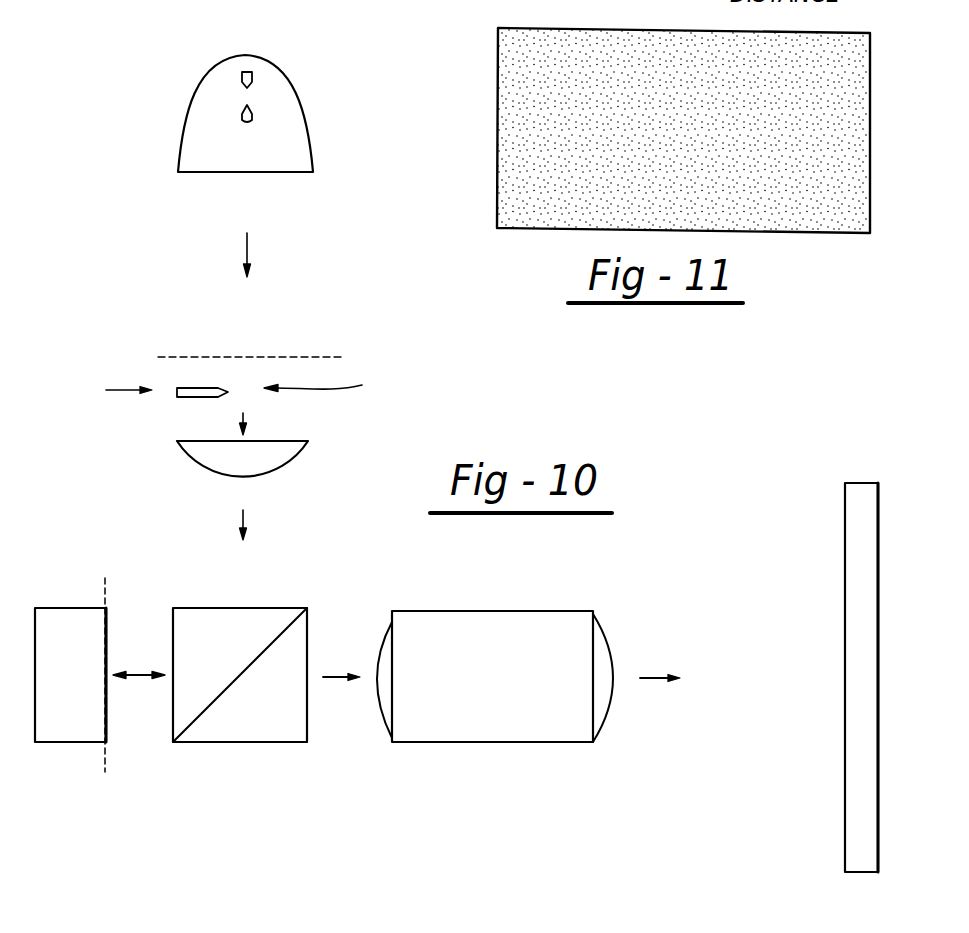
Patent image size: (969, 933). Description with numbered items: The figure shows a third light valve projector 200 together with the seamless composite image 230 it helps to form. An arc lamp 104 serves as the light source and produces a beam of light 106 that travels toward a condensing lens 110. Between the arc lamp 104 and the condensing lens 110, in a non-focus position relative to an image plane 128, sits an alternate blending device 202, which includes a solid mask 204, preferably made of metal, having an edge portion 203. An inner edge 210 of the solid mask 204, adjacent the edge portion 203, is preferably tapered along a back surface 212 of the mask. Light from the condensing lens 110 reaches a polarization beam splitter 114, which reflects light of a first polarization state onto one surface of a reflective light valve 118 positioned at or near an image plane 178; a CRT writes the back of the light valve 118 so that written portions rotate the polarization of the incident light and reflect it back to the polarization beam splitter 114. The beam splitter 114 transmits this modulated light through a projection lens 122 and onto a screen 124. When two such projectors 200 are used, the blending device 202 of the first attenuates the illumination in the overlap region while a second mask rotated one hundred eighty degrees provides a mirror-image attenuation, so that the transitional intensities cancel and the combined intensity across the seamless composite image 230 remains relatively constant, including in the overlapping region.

In FIG. 10, the third light valve projector 200 is at (223, 100).
In FIG. 10, the arc lamp 104 is at (298, 100).
In FIG. 10, the beam of light 106 is at (250, 245).
In FIG. 10, the image plane 128 is at (245, 357).
In FIG. 10, the solid mask 204 is at (226, 393).
In FIG. 10, the blending device 202 is at (96, 392).
In FIG. 10, the edge portion 203 is at (337, 390).
In FIG. 10, the inner edge 210 is at (264, 396).
In FIG. 10, the back surface 212 is at (228, 393).
In FIG. 10, the condensing lens 110 is at (285, 472).
In FIG. 10, the reflective light valve 118 is at (86, 608).
In FIG. 10, the image plane 178 is at (108, 590).
In FIG. 10, the polarization beam splitter 114 is at (256, 608).
In FIG. 10, the projection lens 122 is at (467, 611).
In FIG. 10, the screen 124 is at (845, 560).
In FIG. 11, the seamless composite image 230 is at (497, 68).